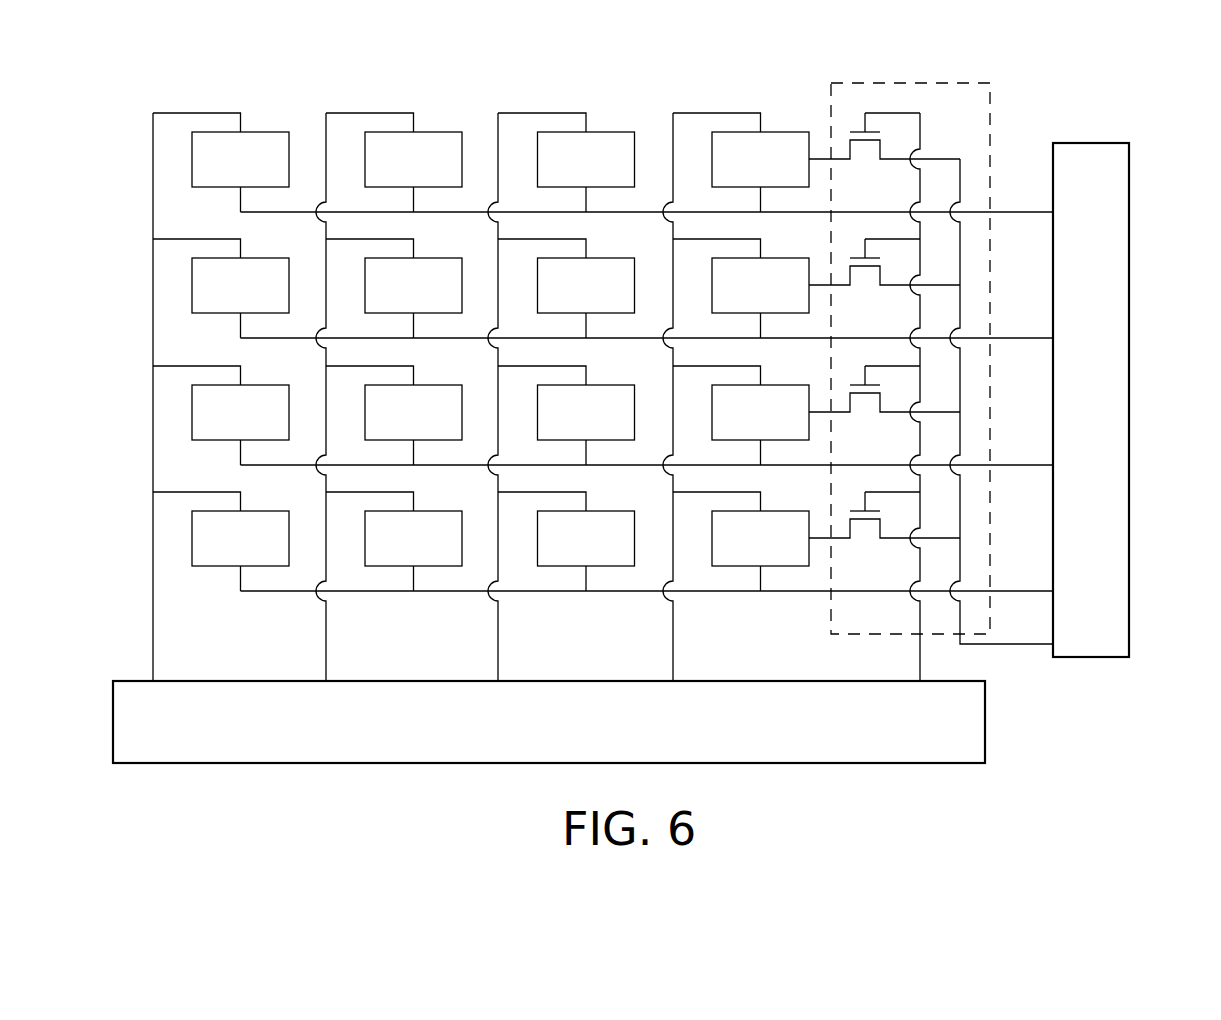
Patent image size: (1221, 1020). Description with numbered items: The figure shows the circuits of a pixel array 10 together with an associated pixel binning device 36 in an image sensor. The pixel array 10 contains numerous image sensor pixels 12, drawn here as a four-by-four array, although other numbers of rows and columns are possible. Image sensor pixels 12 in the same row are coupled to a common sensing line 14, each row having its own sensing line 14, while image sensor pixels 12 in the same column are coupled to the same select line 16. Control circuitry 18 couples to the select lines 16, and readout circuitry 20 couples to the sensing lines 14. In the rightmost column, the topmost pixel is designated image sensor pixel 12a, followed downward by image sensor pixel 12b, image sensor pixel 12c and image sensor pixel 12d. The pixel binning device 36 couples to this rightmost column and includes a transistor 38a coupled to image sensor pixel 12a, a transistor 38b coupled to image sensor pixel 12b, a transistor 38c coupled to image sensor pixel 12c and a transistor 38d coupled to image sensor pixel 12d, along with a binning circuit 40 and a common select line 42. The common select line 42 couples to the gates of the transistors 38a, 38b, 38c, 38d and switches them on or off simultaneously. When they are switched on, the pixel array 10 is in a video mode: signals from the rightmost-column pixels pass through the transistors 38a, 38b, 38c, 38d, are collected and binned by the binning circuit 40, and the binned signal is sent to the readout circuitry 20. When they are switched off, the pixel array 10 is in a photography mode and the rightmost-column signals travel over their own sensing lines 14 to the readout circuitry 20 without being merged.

The pixel array 10 is at (585, 88).
The image sensor pixel 12 is at (255, 173).
The image sensor pixel 12a is at (804, 172).
The image sensor pixel 12b is at (804, 298).
The image sensor pixel 12c is at (804, 425).
The image sensor pixel 12d is at (804, 551).
The sensing line 14 is at (1028, 209).
The select line 16 is at (155, 659).
The control circuitry 18 is at (987, 714).
The readout circuitry 20 is at (1131, 198).
The pixel binning device 36 is at (992, 85).
The transistor 38a is at (863, 152).
The transistor 38b is at (863, 278).
The transistor 38c is at (863, 405).
The transistor 38d is at (863, 531).
The binning circuit 40 is at (962, 501).
The common select line 42 is at (922, 663).